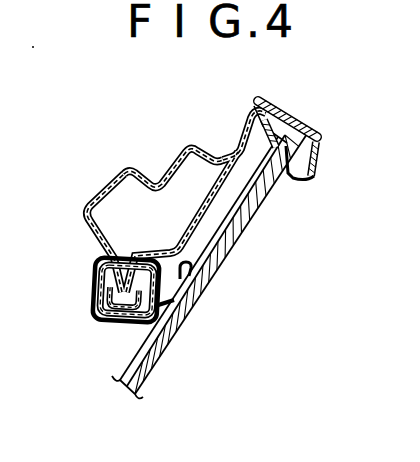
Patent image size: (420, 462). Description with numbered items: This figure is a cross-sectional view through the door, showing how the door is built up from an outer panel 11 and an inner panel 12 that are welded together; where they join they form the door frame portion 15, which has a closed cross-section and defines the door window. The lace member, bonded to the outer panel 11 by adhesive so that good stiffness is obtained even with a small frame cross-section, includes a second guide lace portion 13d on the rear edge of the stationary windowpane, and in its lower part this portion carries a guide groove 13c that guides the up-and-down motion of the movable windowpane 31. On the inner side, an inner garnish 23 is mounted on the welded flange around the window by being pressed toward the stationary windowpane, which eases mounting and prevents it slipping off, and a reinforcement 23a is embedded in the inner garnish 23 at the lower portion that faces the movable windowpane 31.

The outer panel 11 is at (228, 213).
The inner panel 12 is at (88, 213).
The door frame portion 15 is at (129, 170).
The guide groove 13c is at (304, 175).
The second guide lace portion 13d is at (319, 128).
The inner garnish 23 is at (102, 323).
The reinforcement 23a is at (97, 278).
The movable windowpane 31 is at (200, 293).